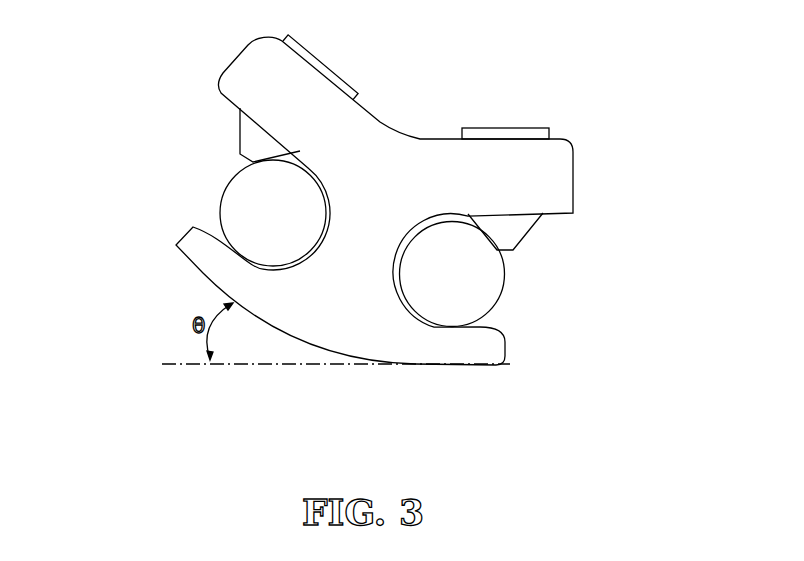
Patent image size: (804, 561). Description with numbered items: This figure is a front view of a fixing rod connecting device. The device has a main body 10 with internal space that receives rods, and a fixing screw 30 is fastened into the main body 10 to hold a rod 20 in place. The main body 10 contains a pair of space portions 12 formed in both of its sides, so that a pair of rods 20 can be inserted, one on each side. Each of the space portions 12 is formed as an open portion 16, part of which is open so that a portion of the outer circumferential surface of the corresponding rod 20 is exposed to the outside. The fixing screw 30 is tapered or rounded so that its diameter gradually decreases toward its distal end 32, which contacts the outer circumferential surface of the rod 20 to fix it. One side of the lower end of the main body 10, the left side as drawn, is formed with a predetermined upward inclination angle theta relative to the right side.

The main body 10 is at (337, 330).
The space portions 12 is at (212, 194).
The open portions 16 is at (176, 167).
The rod 20 is at (255, 238).
The fixing screw 30 is at (510, 137).
The distal end 32 is at (520, 232).